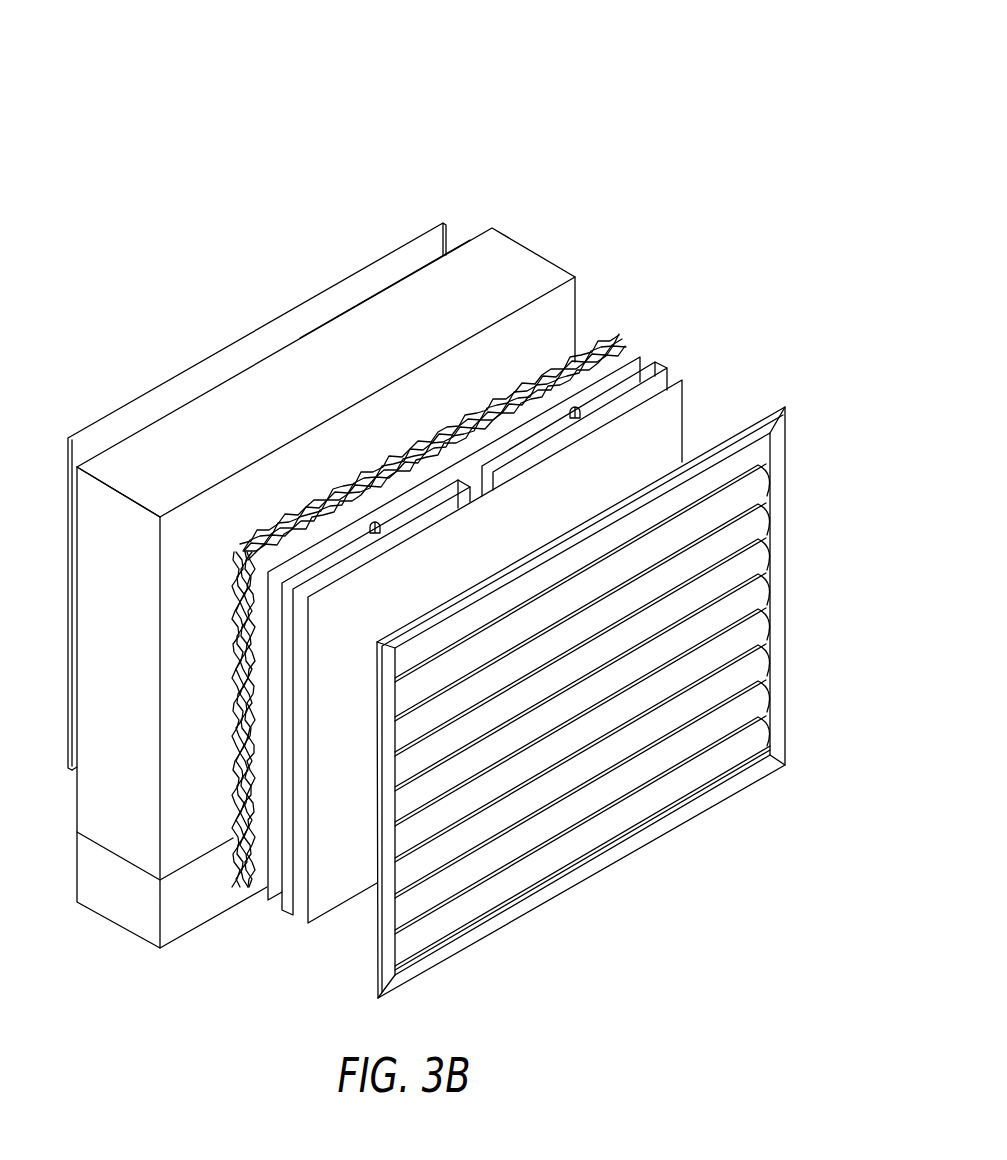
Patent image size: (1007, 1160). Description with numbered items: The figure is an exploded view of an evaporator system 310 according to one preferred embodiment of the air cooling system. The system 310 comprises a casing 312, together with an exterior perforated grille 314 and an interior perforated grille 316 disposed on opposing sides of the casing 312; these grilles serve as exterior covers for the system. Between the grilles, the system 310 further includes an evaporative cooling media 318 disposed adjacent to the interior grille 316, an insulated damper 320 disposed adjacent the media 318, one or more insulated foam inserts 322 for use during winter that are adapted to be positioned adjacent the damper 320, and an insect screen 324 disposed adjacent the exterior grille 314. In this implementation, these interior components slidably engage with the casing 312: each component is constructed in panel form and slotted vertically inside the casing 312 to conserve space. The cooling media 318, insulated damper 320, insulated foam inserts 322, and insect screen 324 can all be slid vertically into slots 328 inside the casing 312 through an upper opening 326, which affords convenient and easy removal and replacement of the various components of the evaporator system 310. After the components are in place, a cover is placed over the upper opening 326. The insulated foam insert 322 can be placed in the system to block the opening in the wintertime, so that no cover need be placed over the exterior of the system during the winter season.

The evaporator system 310 is at (665, 105).
The casing 312 is at (550, 267).
The exterior perforated grille 314 is at (778, 459).
The interior perforated grille 316 is at (148, 408).
The evaporative cooling media 318 is at (612, 342).
The insulated damper 320 is at (632, 364).
The insulated foam insert 322 is at (654, 372).
The insect screen 324 is at (668, 398).
The upper opening 326 is at (103, 472).
The slots 328 is at (505, 245).